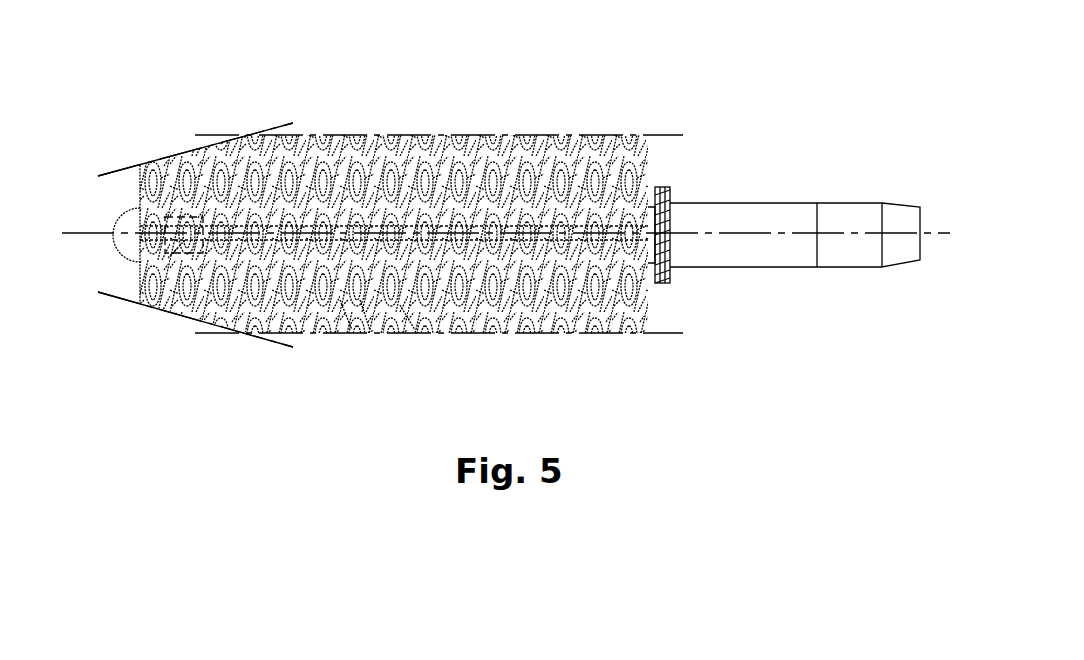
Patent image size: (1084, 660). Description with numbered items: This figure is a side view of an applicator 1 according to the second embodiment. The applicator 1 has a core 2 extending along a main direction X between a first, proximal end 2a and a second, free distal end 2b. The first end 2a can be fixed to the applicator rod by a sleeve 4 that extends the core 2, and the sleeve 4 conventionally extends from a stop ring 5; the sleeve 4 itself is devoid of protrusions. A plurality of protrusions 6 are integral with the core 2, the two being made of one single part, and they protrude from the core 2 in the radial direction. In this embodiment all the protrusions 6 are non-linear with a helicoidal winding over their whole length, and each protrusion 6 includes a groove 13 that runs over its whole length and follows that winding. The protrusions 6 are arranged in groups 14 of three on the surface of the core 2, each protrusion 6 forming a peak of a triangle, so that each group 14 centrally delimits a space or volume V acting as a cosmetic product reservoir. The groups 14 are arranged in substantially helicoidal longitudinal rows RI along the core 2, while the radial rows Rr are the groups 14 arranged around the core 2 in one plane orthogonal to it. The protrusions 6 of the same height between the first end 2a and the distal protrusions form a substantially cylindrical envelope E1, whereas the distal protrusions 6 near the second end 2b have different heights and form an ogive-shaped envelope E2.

The applicator 1 is at (262, 100).
The core 2 is at (413, 232).
The first end 2a is at (648, 213).
The second free end 2b is at (127, 217).
The sleeve 4 is at (847, 218).
The stop ring 5 is at (670, 215).
The protrusions 6 is at (363, 310).
The groove 13 is at (407, 323).
The group 14 is at (170, 255).
The cylindrical envelope E1 is at (558, 137).
The ogive-shaped envelope E2 is at (180, 158).
The main direction X is at (86, 233).
The volume V is at (173, 228).
The longitudinal row RI is at (648, 240).
The radial row Rr is at (632, 342).